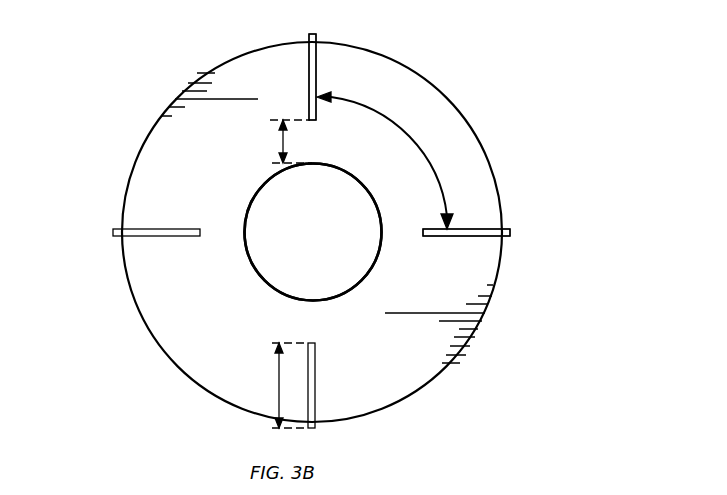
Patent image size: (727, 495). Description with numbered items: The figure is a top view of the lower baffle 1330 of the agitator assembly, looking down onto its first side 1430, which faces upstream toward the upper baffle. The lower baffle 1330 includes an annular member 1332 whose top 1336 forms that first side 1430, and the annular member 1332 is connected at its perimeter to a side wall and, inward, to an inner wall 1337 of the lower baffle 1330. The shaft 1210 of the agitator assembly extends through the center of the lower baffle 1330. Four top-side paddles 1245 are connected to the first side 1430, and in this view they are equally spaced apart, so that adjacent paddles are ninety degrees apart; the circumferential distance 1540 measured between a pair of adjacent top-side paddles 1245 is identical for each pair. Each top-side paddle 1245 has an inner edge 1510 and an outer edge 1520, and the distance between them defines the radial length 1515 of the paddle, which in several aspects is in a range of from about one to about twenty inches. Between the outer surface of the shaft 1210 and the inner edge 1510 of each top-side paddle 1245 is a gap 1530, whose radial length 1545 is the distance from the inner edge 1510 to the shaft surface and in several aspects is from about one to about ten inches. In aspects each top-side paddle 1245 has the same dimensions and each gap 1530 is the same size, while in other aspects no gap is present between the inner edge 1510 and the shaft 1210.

The lower baffle 1330 is at (132, 94).
The top of the annular member 1336 is at (365, 70).
The first side 1430 is at (427, 100).
The annular member 1332 is at (175, 342).
The shaft 1210 is at (265, 210).
The inner wall 1337 is at (248, 260).
The top-side paddles 1245 is at (309, 75).
The outer edge 1520 is at (310, 34).
The inner edge 1510 is at (315, 120).
The gap 1530 is at (412, 241).
The circumferential distance 1540 is at (425, 153).
The radial length of the gap 1545 is at (280, 143).
The radial length of the paddle 1515 is at (278, 380).